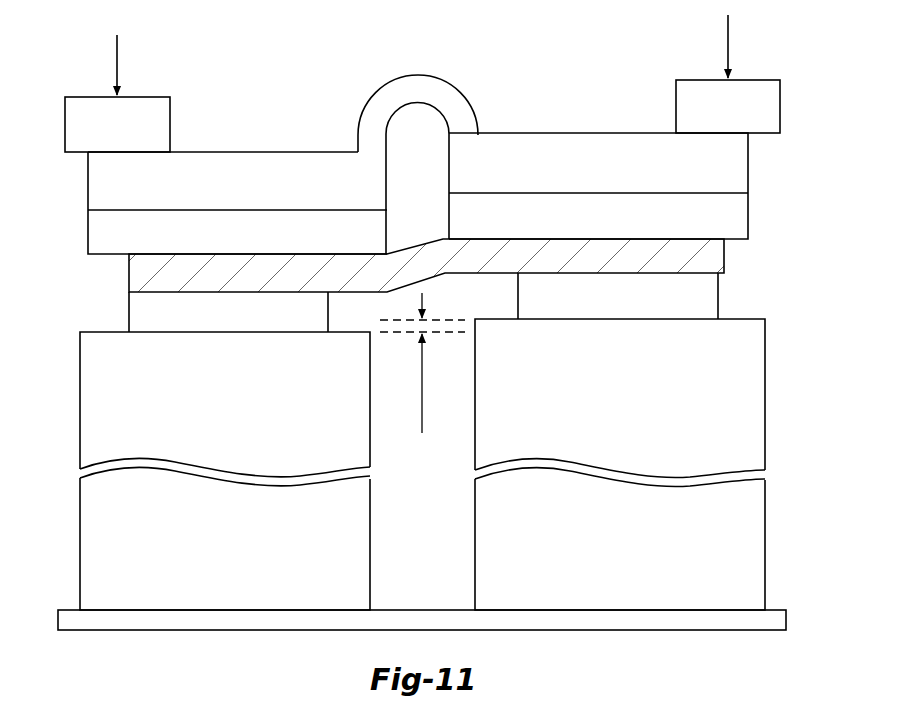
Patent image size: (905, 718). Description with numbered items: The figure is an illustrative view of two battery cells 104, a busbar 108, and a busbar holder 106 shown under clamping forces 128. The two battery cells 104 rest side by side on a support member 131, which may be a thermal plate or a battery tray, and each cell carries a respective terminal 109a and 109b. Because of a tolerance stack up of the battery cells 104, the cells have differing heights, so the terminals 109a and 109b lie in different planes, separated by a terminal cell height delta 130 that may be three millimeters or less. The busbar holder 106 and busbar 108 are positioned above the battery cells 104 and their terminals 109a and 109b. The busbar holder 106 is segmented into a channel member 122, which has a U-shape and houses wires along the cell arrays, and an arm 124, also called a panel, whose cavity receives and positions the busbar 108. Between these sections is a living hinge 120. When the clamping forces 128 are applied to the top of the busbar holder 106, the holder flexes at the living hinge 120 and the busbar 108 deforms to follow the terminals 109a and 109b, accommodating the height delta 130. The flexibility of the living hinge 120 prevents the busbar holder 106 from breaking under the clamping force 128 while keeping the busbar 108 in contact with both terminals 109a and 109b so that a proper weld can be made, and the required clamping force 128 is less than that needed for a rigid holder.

The battery cell 104 is at (98, 416).
The busbar holder 106 is at (86, 197).
The busbar 108 is at (725, 255).
The terminal 109a is at (702, 299).
The terminal 109b is at (142, 316).
The living hinge 120 is at (419, 75).
The channel member 122 is at (88, 177).
The arm 124 is at (105, 239).
The clamping force 128 is at (118, 58).
The terminal cell height delta 130 is at (422, 408).
The support member 131 is at (119, 620).